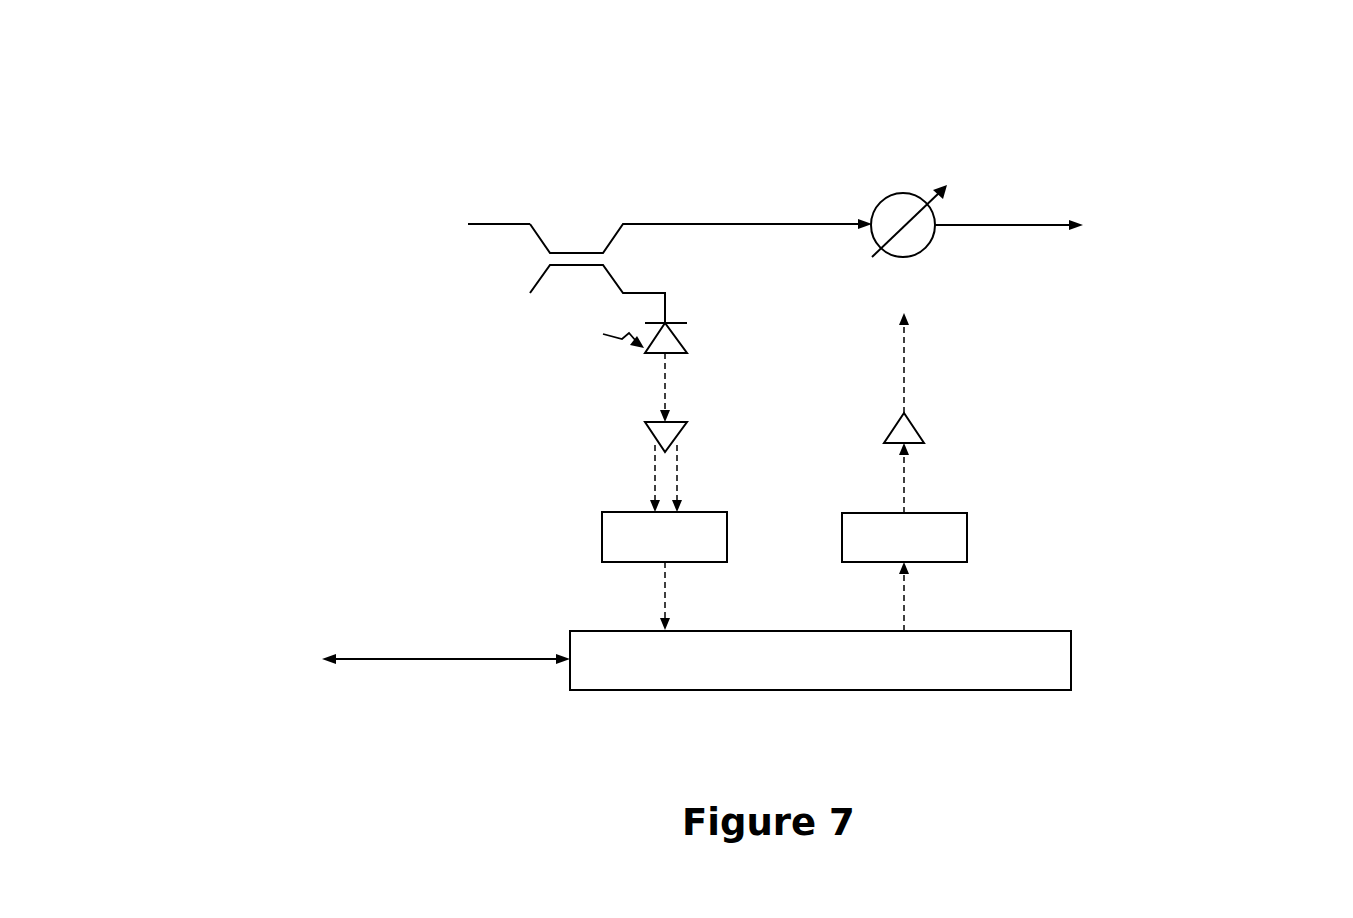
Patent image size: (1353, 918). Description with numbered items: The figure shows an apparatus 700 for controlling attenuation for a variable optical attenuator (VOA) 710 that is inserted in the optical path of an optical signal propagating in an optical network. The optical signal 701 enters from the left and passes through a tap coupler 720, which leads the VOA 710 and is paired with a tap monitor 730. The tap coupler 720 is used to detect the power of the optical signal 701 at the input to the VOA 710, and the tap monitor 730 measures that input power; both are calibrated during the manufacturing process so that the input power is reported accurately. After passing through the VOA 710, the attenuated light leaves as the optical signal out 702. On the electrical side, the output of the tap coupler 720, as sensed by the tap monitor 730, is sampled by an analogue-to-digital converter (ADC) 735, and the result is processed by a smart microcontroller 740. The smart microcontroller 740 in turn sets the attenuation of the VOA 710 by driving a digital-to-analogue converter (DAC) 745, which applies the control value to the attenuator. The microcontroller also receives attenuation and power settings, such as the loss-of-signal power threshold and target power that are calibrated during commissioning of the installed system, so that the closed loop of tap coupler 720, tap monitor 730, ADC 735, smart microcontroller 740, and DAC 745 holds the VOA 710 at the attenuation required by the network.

The apparatus for controlling attenuation 700 is at (332, 90).
The optical signal 701 is at (401, 235).
The optical signal out (Poutput) 702 is at (1120, 236).
The variable optical attenuator (VOA) 710 is at (903, 193).
The tap coupler 720 is at (601, 126).
The tap monitor 730 is at (680, 320).
The analogue-to-digital converter (ADC) 735 is at (602, 522).
The smart microcontroller 740 is at (1018, 631).
The digital-to-analogue converter (DAC) 745 is at (967, 527).